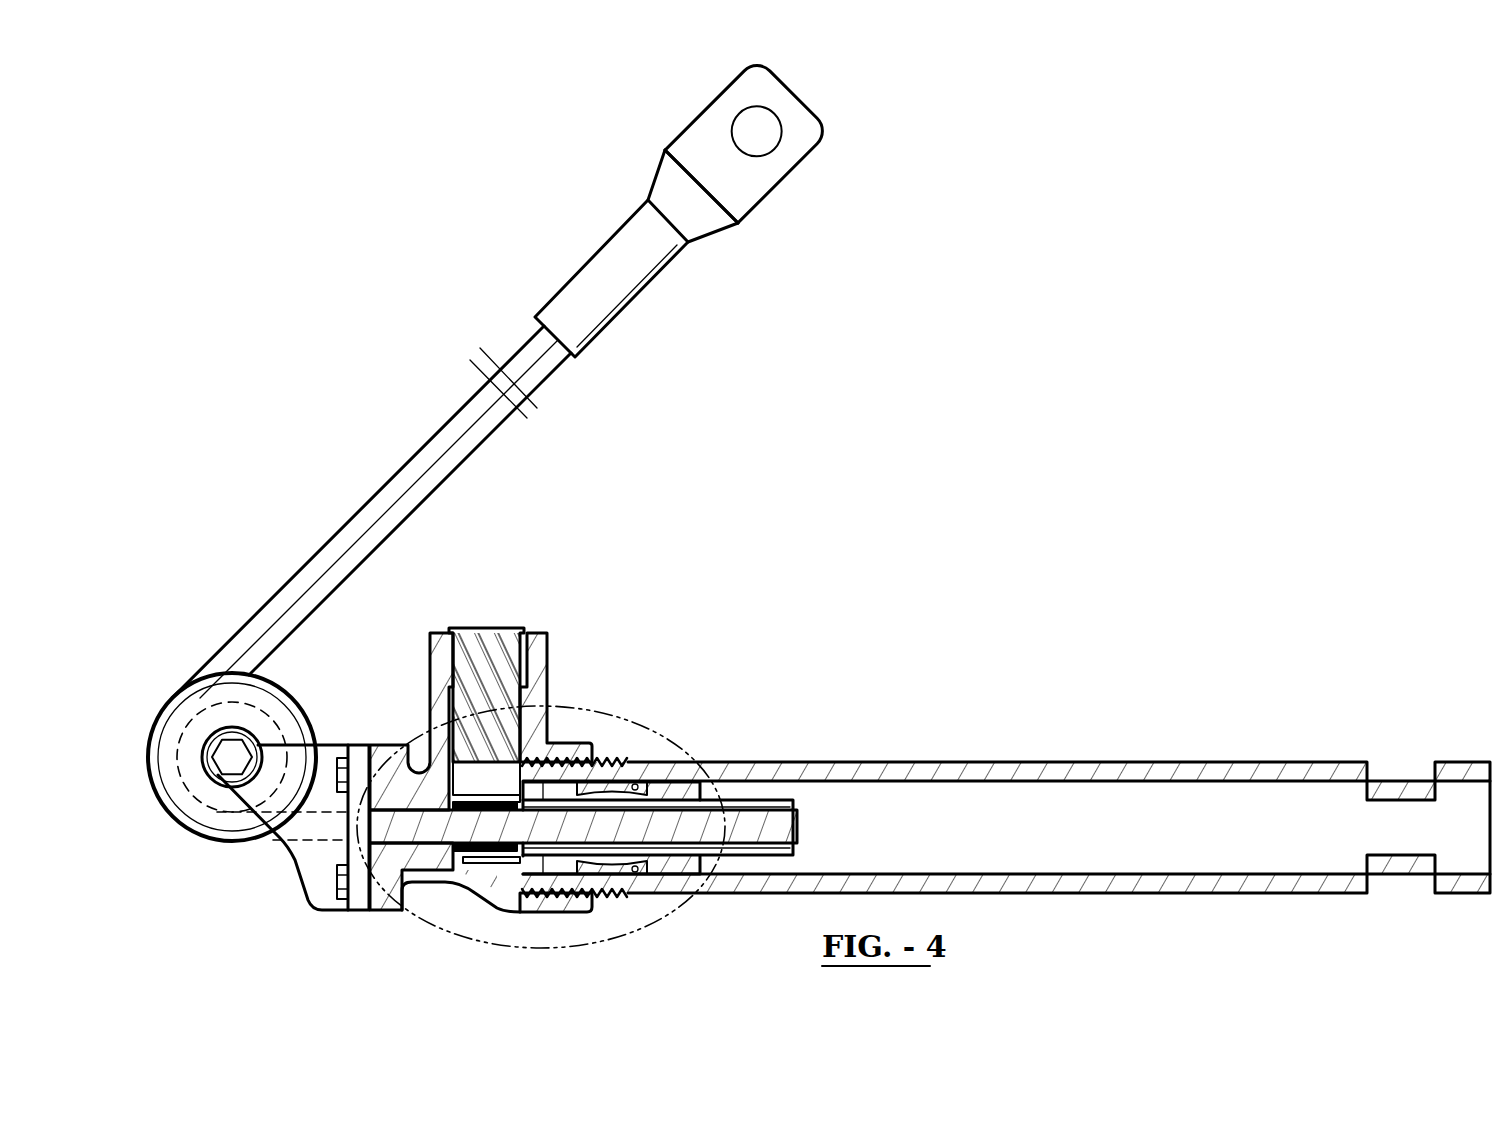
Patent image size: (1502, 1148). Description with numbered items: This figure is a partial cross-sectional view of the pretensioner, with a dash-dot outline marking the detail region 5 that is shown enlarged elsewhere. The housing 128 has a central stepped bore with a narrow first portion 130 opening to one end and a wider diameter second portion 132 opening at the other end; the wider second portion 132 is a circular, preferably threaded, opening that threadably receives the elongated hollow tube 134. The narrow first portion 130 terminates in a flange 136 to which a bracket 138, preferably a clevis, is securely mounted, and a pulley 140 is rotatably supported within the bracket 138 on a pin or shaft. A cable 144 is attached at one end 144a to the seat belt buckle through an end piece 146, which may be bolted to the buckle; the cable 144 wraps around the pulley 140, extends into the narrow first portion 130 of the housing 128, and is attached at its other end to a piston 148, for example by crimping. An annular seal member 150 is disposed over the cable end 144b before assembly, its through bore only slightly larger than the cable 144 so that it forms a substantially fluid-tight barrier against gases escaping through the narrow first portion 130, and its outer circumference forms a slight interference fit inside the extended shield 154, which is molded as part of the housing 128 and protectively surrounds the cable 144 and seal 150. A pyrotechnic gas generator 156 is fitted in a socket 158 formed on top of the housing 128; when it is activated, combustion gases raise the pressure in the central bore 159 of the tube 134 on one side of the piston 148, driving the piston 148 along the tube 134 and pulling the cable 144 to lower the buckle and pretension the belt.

The housing 128 is at (510, 897).
The narrow first portion 130 is at (392, 905).
The wider diameter second portion 132 is at (557, 778).
The elongated hollow tube 134 is at (728, 882).
The flange 136 is at (387, 745).
The bracket 138 is at (300, 858).
The pulley 140 is at (250, 697).
The cable 144 is at (380, 508).
The cable end 144a is at (533, 340).
The cable end 144b is at (790, 826).
The end piece 146 is at (690, 150).
The piston 148 is at (752, 805).
The annular seal member 150 is at (430, 830).
The extended shield 154 is at (498, 787).
The gas generator 156 is at (476, 645).
The socket 158 is at (535, 665).
The central bore 159 is at (968, 790).
The detail view indicator 5 is at (675, 705).